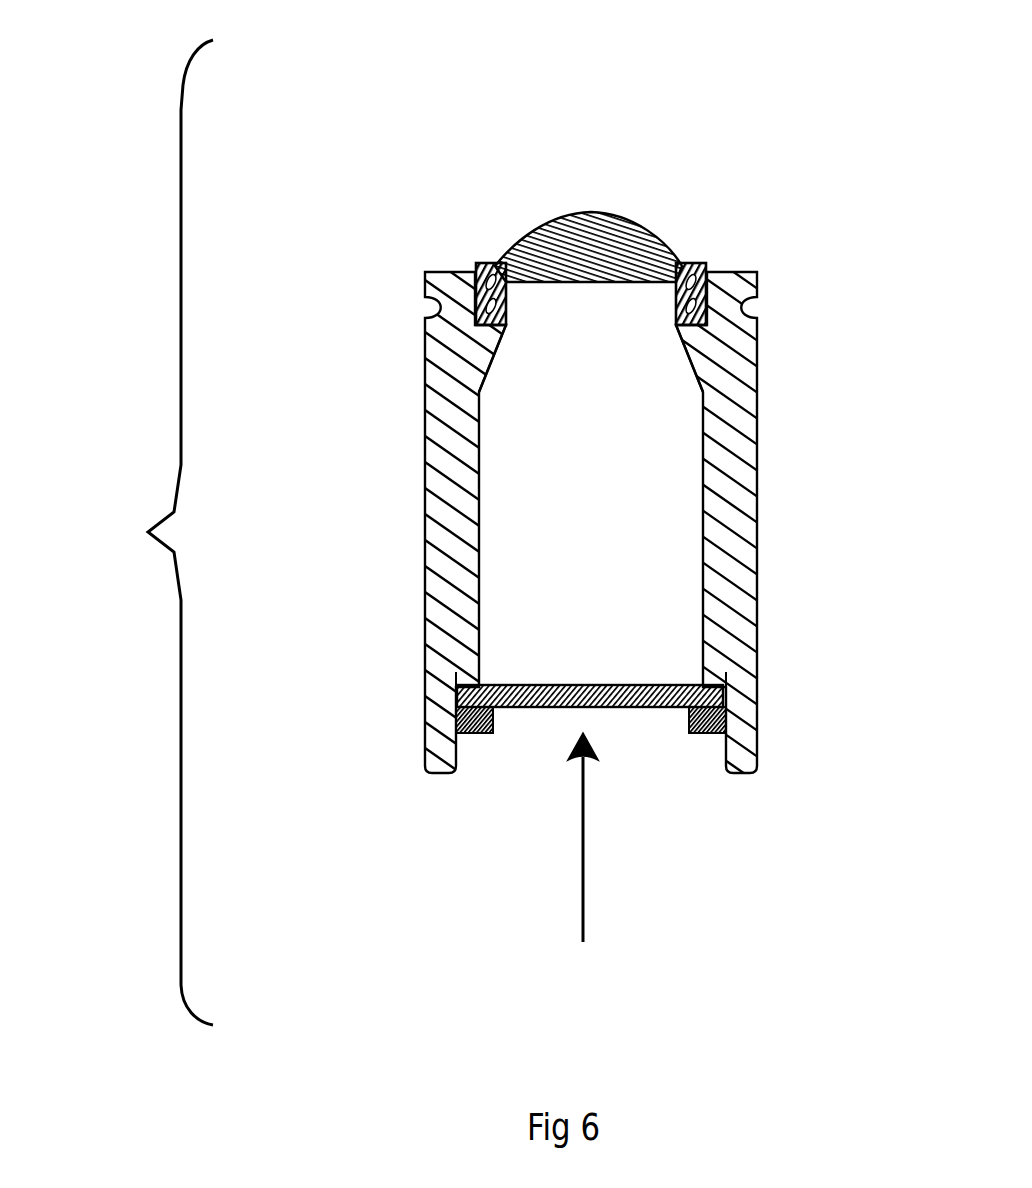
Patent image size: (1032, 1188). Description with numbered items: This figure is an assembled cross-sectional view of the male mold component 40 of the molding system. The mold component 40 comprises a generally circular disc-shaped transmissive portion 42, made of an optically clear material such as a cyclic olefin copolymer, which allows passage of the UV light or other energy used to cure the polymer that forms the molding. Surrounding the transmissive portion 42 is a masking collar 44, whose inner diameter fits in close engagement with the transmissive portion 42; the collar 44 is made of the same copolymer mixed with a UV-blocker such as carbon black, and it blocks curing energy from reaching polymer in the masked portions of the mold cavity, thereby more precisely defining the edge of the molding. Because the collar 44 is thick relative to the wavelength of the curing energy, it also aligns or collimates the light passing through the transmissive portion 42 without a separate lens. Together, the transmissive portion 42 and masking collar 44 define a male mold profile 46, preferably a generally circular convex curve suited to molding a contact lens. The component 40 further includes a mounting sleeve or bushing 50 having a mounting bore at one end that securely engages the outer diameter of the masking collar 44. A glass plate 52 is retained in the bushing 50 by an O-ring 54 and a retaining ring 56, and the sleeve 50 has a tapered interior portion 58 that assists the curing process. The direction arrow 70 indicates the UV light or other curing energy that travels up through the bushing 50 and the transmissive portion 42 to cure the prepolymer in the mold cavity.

The mold component 40 is at (120, 532).
The transmissive portion 42 is at (618, 250).
The masking collar 44 is at (481, 263).
The male mold profile 46 is at (548, 220).
The mounting sleeve or bushing 50 is at (754, 481).
The glass plate 52 is at (645, 708).
The O-ring 54 is at (722, 728).
The retaining ring 56 is at (490, 712).
The tapered interior portion 58 is at (492, 364).
The direction arrow 70 is at (581, 886).